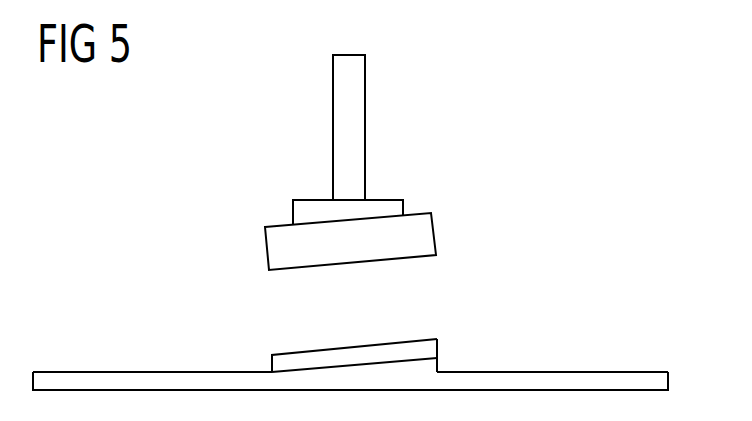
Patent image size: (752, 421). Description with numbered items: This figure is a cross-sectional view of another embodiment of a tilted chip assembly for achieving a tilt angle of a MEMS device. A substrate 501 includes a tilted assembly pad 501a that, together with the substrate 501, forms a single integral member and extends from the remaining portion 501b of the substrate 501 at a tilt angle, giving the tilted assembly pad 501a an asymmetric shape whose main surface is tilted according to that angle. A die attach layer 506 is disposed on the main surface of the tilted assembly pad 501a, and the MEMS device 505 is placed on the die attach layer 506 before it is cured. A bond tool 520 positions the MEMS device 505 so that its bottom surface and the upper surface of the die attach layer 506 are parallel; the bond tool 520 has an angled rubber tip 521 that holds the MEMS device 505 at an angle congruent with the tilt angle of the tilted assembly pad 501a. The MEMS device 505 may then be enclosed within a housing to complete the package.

The bond tool 520 is at (365, 126).
The angled rubber tip 521 is at (293, 200).
The MEMS device 505 is at (437, 230).
The die attach layer 506 is at (296, 360).
The substrate 501 is at (638, 372).
The tilted assembly pad 501a is at (440, 368).
The remaining portion 501b is at (88, 372).